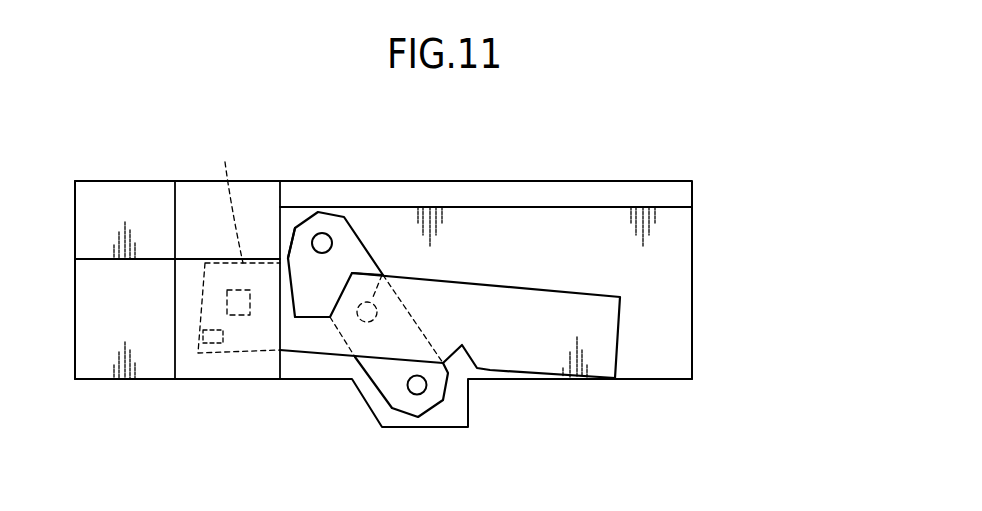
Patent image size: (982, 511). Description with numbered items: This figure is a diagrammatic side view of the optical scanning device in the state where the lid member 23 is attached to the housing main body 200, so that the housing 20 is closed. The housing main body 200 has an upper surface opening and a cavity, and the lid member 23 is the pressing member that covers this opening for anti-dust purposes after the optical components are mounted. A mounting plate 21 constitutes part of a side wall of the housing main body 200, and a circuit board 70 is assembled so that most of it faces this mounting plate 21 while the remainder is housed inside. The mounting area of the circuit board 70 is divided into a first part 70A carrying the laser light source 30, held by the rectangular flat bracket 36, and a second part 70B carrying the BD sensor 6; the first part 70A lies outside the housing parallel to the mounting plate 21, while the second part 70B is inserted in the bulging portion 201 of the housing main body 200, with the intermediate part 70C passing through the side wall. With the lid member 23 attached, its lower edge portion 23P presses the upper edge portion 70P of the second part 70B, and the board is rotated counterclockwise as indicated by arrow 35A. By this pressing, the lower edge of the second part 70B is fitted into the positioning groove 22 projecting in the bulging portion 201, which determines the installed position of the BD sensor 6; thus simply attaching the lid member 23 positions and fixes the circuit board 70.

The housing 20 is at (700, 242).
The housing main body 200 is at (693, 337).
The mounting plate 21 is at (663, 280).
The lid member 23 is at (588, 180).
The lower edge portion 23P is at (193, 258).
The positioning groove 22 is at (198, 353).
The BD sensor 6 is at (240, 318).
The bulging portion 201 is at (222, 380).
The circuit board 70 is at (455, 290).
The first part 70A is at (449, 283).
The second part 70B is at (255, 263).
The intermediate part 70C is at (282, 318).
The upper edge portion 70P is at (224, 196).
The arrow 35A is at (343, 320).
The bracket 36 is at (397, 390).
The laser light source 30 is at (382, 275).